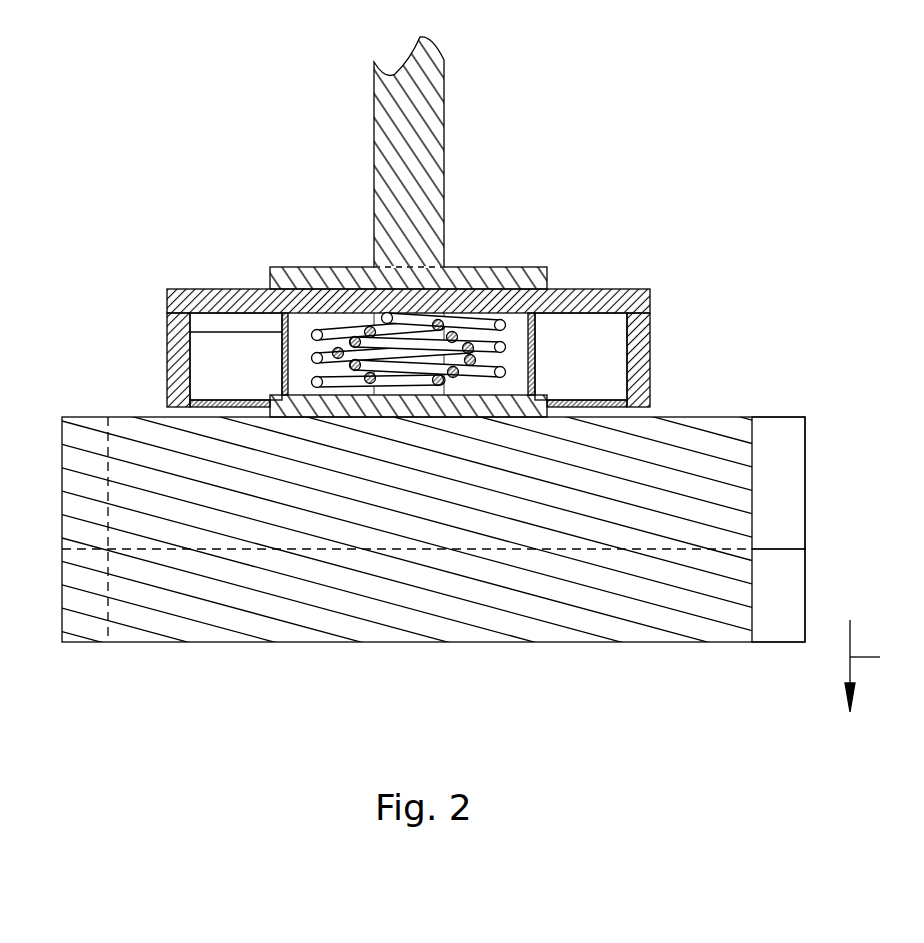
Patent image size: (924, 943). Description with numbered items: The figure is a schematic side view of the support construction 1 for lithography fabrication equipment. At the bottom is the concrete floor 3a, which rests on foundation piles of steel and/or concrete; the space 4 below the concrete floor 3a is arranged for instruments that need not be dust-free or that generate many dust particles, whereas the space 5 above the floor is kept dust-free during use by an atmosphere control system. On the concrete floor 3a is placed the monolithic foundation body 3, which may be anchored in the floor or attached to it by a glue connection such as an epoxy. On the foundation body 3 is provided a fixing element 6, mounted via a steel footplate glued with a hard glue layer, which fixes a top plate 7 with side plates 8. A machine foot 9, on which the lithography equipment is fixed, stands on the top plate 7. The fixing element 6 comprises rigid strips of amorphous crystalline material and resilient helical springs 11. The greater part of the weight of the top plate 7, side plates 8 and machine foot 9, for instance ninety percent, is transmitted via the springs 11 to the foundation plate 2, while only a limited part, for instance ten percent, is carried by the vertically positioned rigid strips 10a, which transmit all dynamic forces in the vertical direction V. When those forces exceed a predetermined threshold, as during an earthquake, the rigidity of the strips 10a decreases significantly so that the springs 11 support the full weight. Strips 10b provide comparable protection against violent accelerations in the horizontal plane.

The support construction 1 is at (483, 427).
The foundation plate 2 is at (502, 412).
The monolithic foundation body 3 is at (780, 485).
The concrete floor 3a is at (780, 578).
The space below the concrete floor 4 is at (118, 695).
The space above the concrete floor 5 is at (118, 393).
The fixing element 6 is at (631, 356).
The top plate 7 is at (590, 302).
The side plates 8 is at (402, 453).
The machine foot 9 is at (430, 140).
The vertically positioned rigid strips 10a is at (190, 332).
The strips 10b is at (227, 407).
The helical springs 11 is at (478, 325).